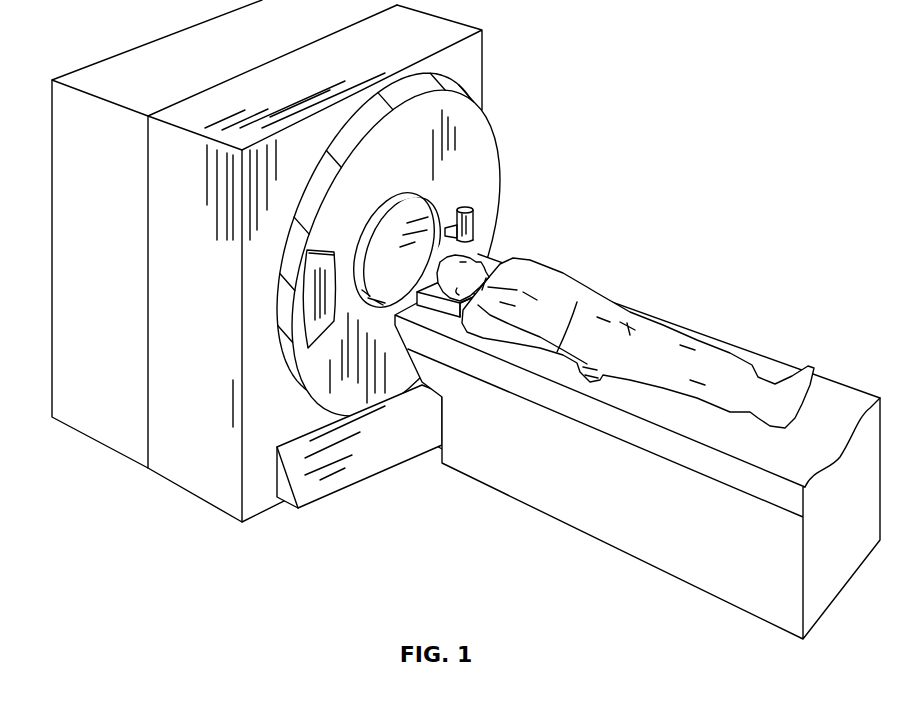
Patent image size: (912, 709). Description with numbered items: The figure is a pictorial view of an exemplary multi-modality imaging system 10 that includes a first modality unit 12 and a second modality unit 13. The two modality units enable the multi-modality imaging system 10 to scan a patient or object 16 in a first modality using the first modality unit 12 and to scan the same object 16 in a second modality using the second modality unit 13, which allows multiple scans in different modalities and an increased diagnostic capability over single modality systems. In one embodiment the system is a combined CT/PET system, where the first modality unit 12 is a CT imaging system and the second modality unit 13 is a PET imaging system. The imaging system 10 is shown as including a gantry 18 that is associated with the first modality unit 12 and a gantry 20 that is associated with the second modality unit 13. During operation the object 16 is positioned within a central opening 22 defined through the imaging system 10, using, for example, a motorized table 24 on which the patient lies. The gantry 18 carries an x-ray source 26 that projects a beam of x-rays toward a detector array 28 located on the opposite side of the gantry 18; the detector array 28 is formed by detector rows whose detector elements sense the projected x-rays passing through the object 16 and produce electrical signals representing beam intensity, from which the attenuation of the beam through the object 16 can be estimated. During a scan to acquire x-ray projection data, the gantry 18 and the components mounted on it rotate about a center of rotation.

The multi-modality imaging system 10 is at (422, 460).
The first modality unit 12 is at (187, 468).
The second modality unit 13 is at (98, 418).
The patient or object 16 is at (625, 341).
The gantry 18 is at (476, 51).
The gantry 20 is at (98, 72).
The central opening 22 is at (372, 218).
The motorized table 24 is at (604, 510).
The x-ray source 26 is at (476, 228).
The detector array 28 is at (322, 322).